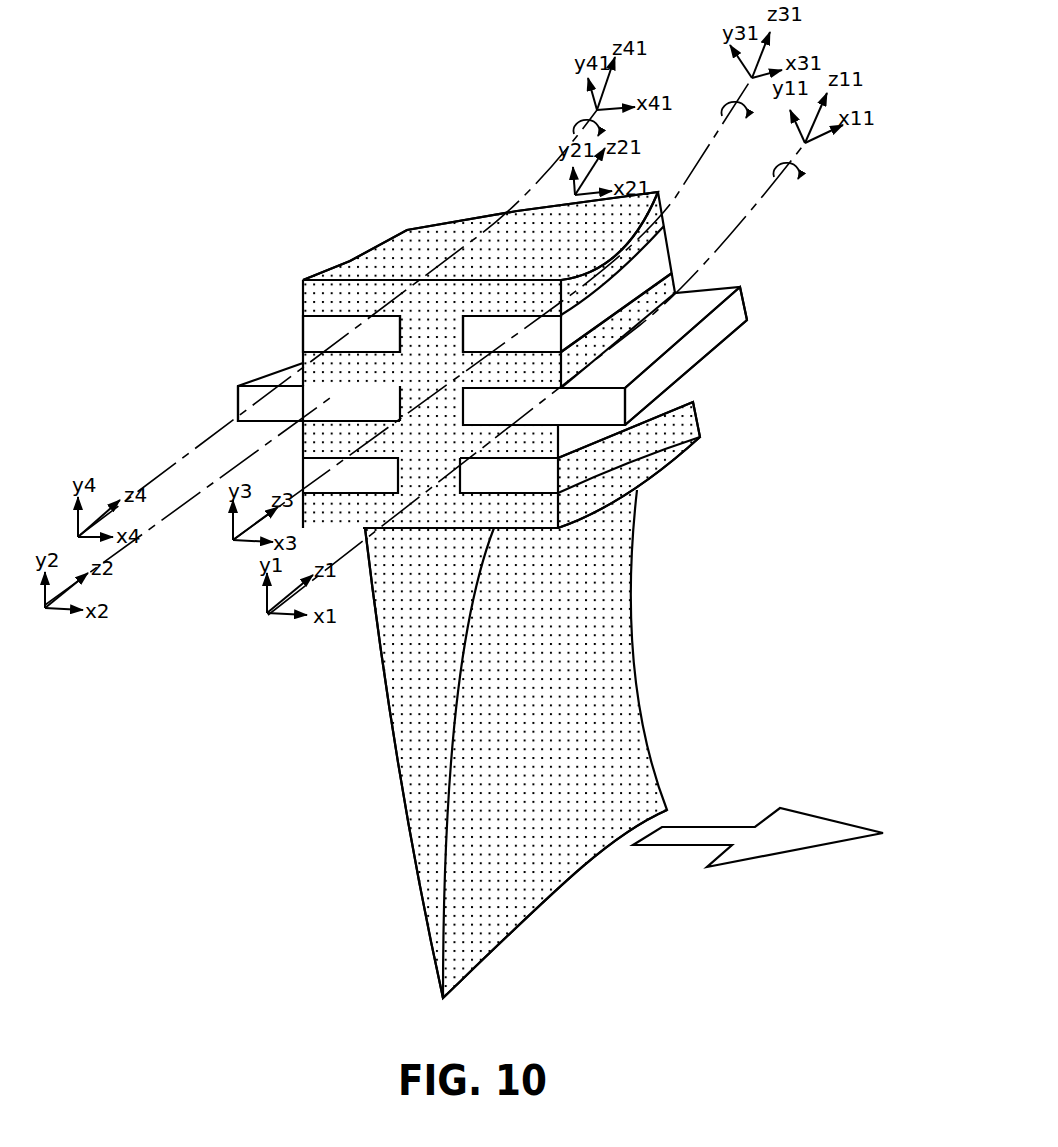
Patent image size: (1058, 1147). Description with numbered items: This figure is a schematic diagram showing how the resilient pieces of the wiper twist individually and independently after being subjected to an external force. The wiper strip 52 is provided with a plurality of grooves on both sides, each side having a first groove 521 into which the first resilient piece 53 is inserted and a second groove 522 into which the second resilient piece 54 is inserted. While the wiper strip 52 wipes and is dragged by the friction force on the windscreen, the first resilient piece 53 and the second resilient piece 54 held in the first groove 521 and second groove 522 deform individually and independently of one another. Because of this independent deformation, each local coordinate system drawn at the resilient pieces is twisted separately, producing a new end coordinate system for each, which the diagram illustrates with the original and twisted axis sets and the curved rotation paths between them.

The wiper strip 52 is at (424, 760).
The first resilient piece 53 is at (237, 383).
The second resilient piece 54 is at (310, 335).
The first groove 521 is at (302, 378).
The second groove 522 is at (352, 313).